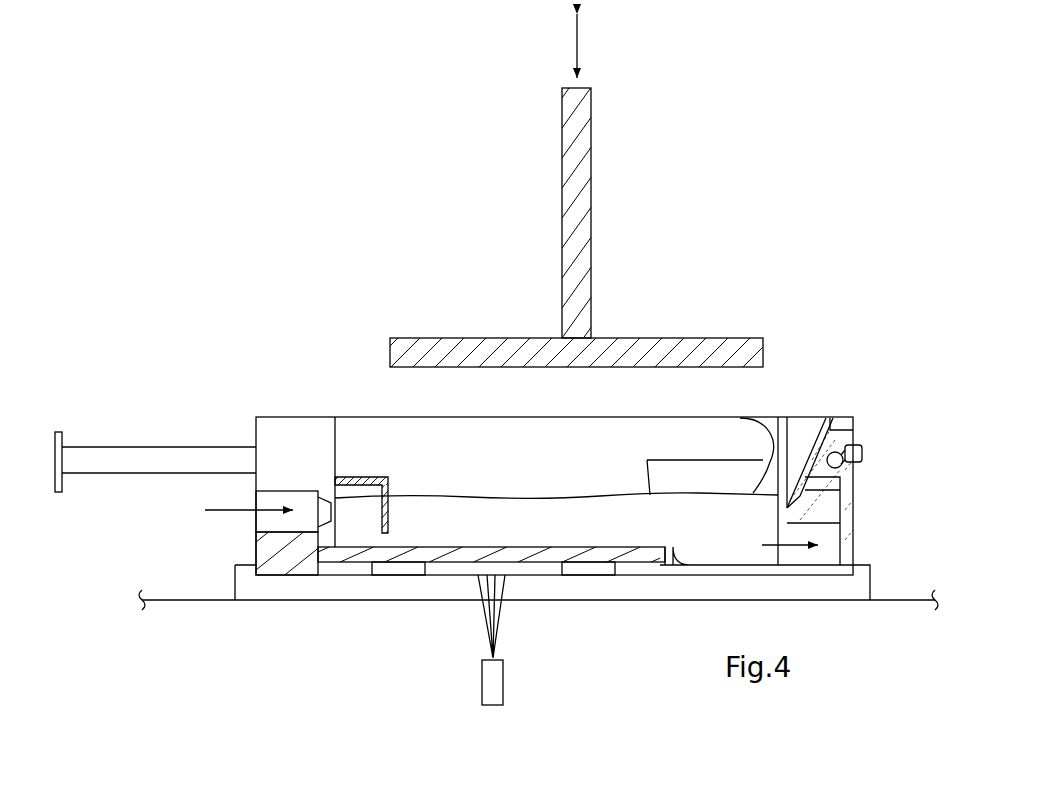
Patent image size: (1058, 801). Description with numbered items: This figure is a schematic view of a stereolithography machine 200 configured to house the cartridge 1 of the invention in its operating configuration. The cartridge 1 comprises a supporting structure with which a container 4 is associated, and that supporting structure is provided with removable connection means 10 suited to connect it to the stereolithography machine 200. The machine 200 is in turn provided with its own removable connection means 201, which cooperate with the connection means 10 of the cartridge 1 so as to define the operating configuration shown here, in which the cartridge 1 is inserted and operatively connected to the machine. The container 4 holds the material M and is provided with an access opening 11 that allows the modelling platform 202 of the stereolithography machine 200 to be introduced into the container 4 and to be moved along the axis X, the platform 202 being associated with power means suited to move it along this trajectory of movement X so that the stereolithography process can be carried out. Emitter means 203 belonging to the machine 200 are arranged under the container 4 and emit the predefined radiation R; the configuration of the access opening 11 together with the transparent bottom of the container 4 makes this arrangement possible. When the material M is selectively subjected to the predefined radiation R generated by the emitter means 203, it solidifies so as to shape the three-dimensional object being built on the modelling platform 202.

The stereolithography machine 200 is at (805, 197).
The modelling platform 202 is at (622, 217).
The cartridge 1 is at (873, 393).
The access opening 11 is at (357, 408).
The container 4 is at (720, 437).
The removable connection means 10 is at (252, 560).
The removable connection means 201 is at (227, 570).
The emitter means 203 is at (487, 682).
The predefined radiation R is at (503, 623).
The material M is at (565, 534).
The axis of movement X is at (585, 46).